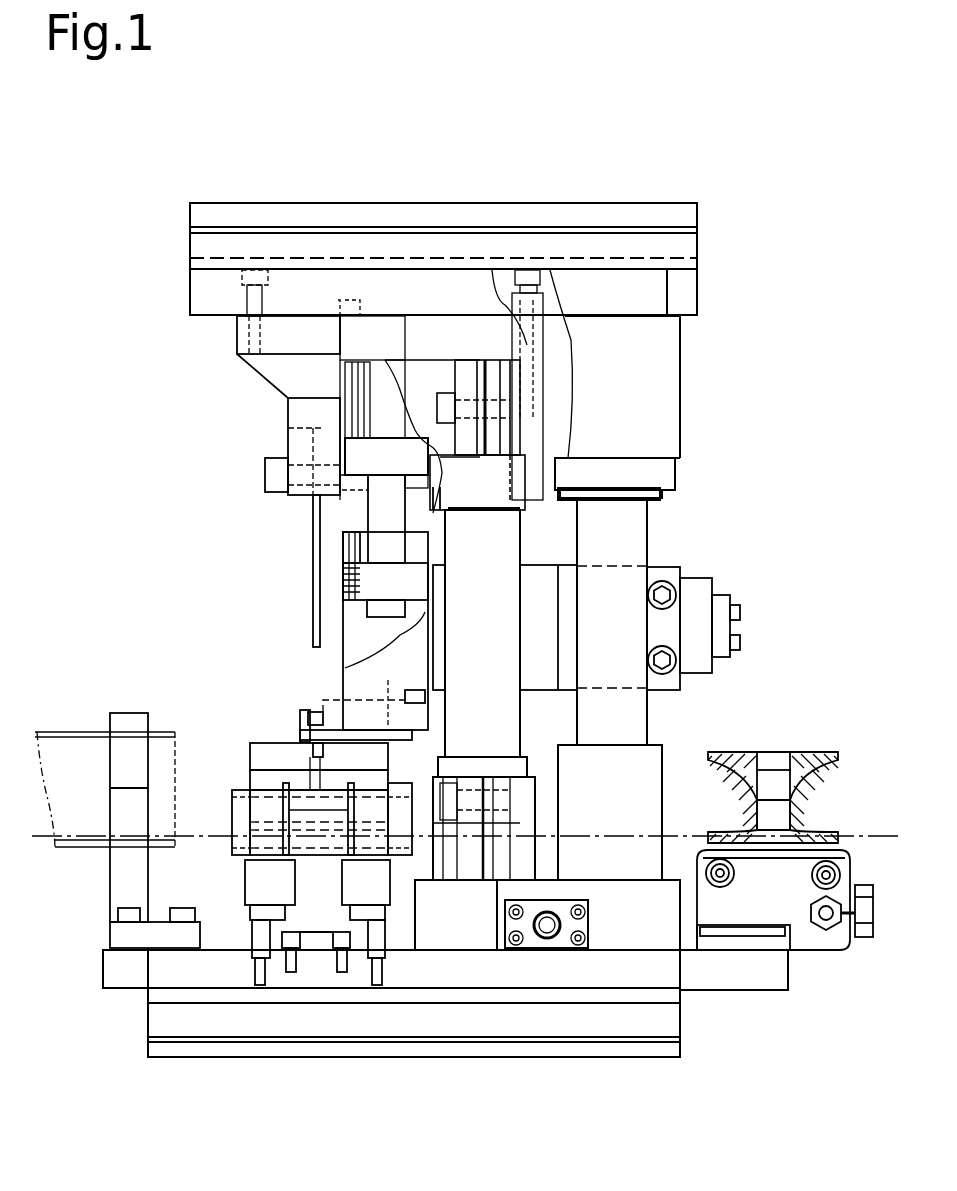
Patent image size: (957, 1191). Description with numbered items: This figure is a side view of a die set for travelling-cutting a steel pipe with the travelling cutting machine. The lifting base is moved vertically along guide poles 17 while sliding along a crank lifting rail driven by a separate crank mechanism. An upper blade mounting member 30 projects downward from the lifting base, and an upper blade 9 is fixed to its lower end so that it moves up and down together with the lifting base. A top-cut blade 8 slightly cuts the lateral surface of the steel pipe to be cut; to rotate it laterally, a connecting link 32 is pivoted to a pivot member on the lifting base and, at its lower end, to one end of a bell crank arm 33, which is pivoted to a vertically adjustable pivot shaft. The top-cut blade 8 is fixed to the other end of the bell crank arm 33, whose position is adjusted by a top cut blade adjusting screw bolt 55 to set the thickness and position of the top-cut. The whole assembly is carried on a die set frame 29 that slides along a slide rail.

The top-cut blade 8 is at (318, 712).
The upper blade 9 is at (313, 615).
The guide poles 17 is at (490, 725).
The die set frame 29 is at (702, 972).
The upper blade mounting member 30 is at (303, 412).
The connecting link 32 is at (385, 522).
The bell crank arm 33 is at (408, 657).
The top cut blade adjusting screw bolt 55 is at (547, 935).